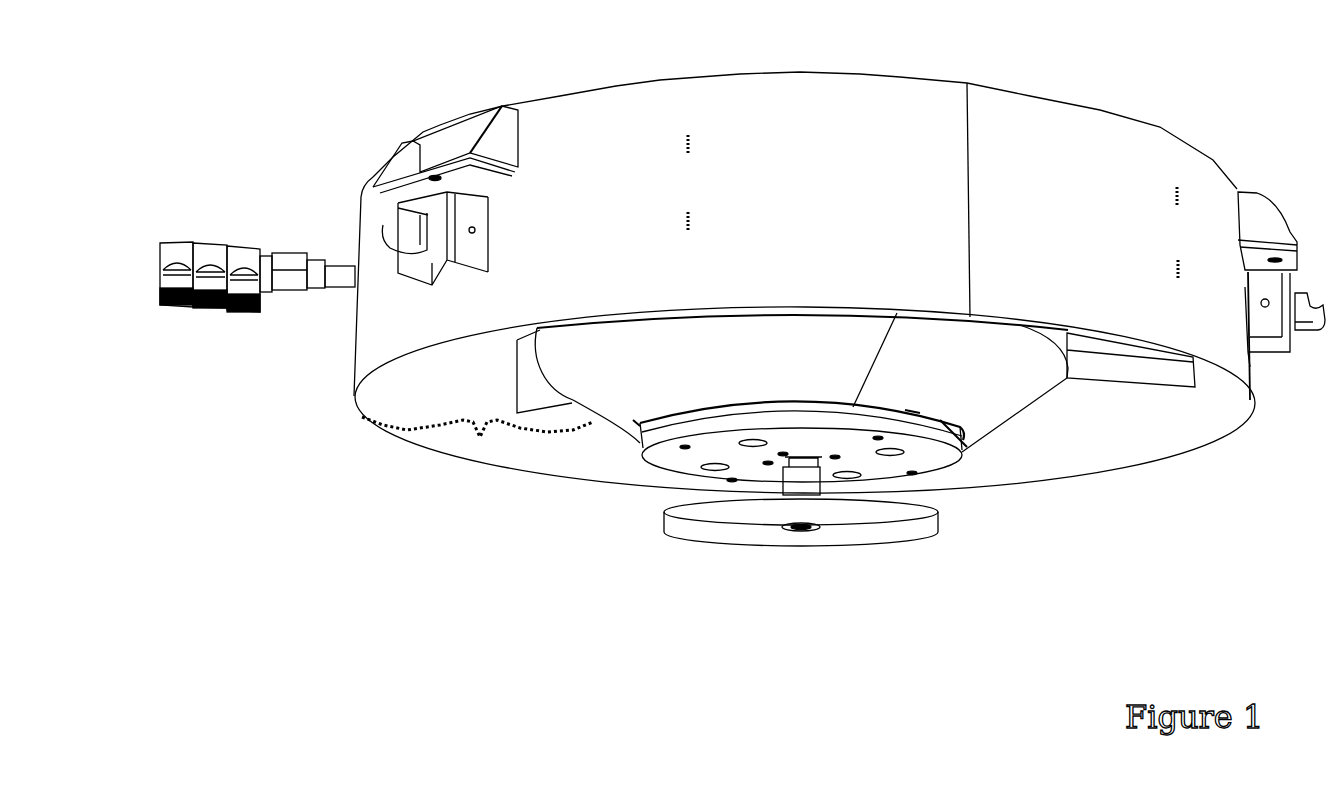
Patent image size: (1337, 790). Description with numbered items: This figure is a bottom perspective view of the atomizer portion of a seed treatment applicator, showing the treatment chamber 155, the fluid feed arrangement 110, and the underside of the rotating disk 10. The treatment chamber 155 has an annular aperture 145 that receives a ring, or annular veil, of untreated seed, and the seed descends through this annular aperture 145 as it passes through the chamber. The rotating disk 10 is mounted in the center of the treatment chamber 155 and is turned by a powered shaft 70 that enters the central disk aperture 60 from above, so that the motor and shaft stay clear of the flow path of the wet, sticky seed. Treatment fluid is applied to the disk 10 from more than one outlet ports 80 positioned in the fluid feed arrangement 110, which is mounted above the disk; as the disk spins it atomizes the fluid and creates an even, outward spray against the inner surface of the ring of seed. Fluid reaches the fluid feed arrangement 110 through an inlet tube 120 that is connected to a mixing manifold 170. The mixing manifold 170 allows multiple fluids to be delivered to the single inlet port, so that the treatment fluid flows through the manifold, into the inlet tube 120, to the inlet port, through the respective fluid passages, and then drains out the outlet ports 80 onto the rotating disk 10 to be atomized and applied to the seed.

The rotating disk 10 is at (778, 570).
The central disk aperture 60 is at (788, 531).
The powered shaft 70 is at (809, 533).
The outlet ports 80 is at (835, 454).
The fluid feed arrangement 110 is at (869, 432).
The inlet tube 120 is at (340, 289).
The annular aperture 145 is at (477, 441).
The treatment chamber 155 is at (360, 198).
The mixing manifold 170 is at (232, 327).